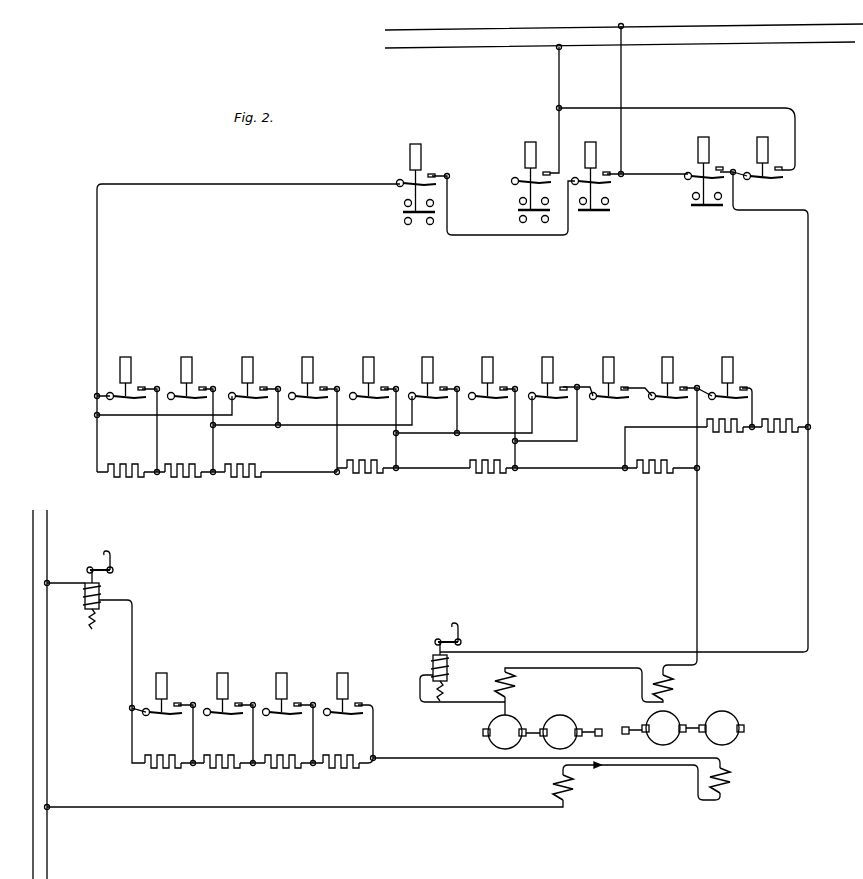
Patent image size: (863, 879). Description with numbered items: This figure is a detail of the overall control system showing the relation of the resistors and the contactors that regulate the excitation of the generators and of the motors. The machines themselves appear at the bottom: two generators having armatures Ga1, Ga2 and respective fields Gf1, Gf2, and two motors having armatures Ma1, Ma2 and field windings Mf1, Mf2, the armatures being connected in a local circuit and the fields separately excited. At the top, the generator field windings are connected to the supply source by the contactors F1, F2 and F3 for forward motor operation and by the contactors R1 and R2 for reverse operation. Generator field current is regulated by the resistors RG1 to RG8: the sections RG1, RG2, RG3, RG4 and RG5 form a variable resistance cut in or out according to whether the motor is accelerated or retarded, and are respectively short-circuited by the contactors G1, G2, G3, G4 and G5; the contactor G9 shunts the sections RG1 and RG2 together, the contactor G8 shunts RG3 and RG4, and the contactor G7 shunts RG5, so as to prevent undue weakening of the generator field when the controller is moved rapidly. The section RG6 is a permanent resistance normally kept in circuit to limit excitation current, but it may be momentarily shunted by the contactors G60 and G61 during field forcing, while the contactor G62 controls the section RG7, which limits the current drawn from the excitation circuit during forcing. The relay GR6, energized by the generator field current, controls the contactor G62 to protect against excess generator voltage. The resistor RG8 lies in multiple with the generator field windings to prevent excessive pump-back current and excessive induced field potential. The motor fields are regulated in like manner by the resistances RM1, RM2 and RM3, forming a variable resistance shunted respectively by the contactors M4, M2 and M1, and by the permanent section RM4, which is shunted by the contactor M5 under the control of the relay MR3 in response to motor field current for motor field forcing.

The contactor F1 is at (762, 136).
The contactor F2 is at (589, 141).
The contactor F3 is at (417, 143).
The contactor R1 is at (530, 141).
The contactor R2 is at (703, 136).
The contactor G1 is at (127, 356).
The contactor G2 is at (188, 356).
The contactor G3 is at (307, 356).
The contactor G4 is at (367, 356).
The contactor G5 is at (487, 356).
The contactor G7 is at (547, 356).
The contactor G8 is at (427, 356).
The contactor G9 is at (248, 356).
The contactor G60 is at (608, 356).
The contactor G61 is at (668, 356).
The contactor G62 is at (728, 356).
The resistor section RG1 is at (126, 483).
The resistor section RG2 is at (183, 483).
The resistor section RG3 is at (243, 482).
The resistor section RG4 is at (365, 479).
The resistor section RG5 is at (488, 479).
The permanent resistance section RG6 is at (655, 476).
The resistor RG7 is at (725, 437).
The resistor RG8 is at (780, 437).
The relay MR3 is at (88, 590).
The contactor M1 is at (282, 672).
The contactor M2 is at (222, 672).
The contactor M4 is at (163, 672).
The contactor M5 is at (342, 672).
The resistance section RM1 is at (163, 772).
The resistance section RM2 is at (222, 772).
The resistance section RM3 is at (283, 771).
The permanent resistance section RM4 is at (341, 771).
The relay GR6 is at (437, 639).
The generator field Gf1 is at (516, 688).
The generator field Gf2 is at (675, 686).
The generator armature Ga1 is at (495, 730).
The generator armature Ga2 is at (653, 722).
The motor armature Ma1 is at (550, 728).
The motor armature Ma2 is at (730, 720).
The motor field winding Mf1 is at (566, 800).
The motor field winding Mf2 is at (732, 779).